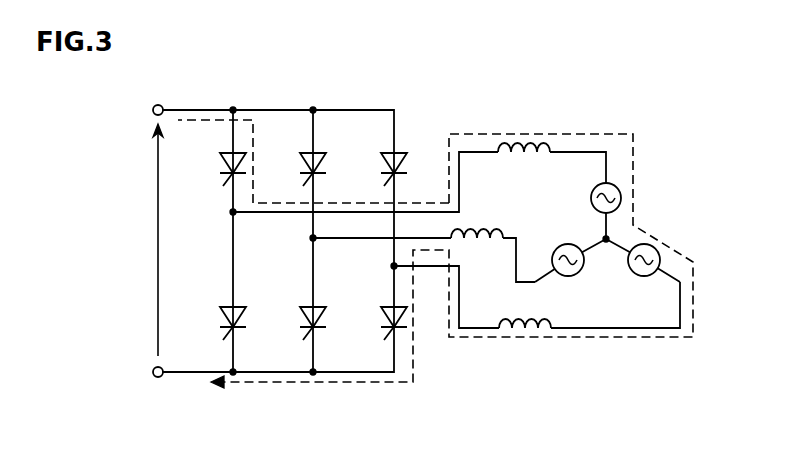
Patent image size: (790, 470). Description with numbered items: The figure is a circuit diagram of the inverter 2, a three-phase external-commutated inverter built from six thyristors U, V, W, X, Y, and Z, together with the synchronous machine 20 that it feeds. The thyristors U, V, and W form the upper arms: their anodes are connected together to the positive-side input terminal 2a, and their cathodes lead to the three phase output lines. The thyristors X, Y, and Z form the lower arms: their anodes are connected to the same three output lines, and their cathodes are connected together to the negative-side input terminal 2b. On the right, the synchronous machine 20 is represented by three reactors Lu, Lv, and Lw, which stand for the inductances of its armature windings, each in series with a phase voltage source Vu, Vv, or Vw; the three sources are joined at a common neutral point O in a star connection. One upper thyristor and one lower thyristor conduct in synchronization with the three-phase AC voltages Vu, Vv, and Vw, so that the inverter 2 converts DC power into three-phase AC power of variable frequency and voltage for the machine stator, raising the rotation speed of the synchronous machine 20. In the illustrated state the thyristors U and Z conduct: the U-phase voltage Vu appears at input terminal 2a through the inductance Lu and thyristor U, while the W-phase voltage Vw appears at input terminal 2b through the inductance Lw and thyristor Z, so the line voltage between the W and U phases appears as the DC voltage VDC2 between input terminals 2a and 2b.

The inverter 2 is at (397, 98).
The positive-side input terminal 2a is at (152, 110).
The negative-side input terminal 2b is at (152, 372).
The synchronous machine 20 is at (664, 166).
The thyristor U is at (224, 169).
The thyristor V is at (305, 169).
The thyristor W is at (384, 169).
The thyristor X is at (224, 323).
The thyristor Y is at (304, 323).
The thyristor Z is at (385, 323).
The inductance Lu is at (419, 177).
The inductance Lv is at (424, 245).
The inductance Lw is at (537, 297).
The U-phase voltage Vu is at (591, 211).
The V-phase voltage Vv is at (570, 271).
The W-phase voltage Vw is at (643, 271).
The neutral point O is at (614, 233).
The DC voltage VDC2 is at (129, 240).